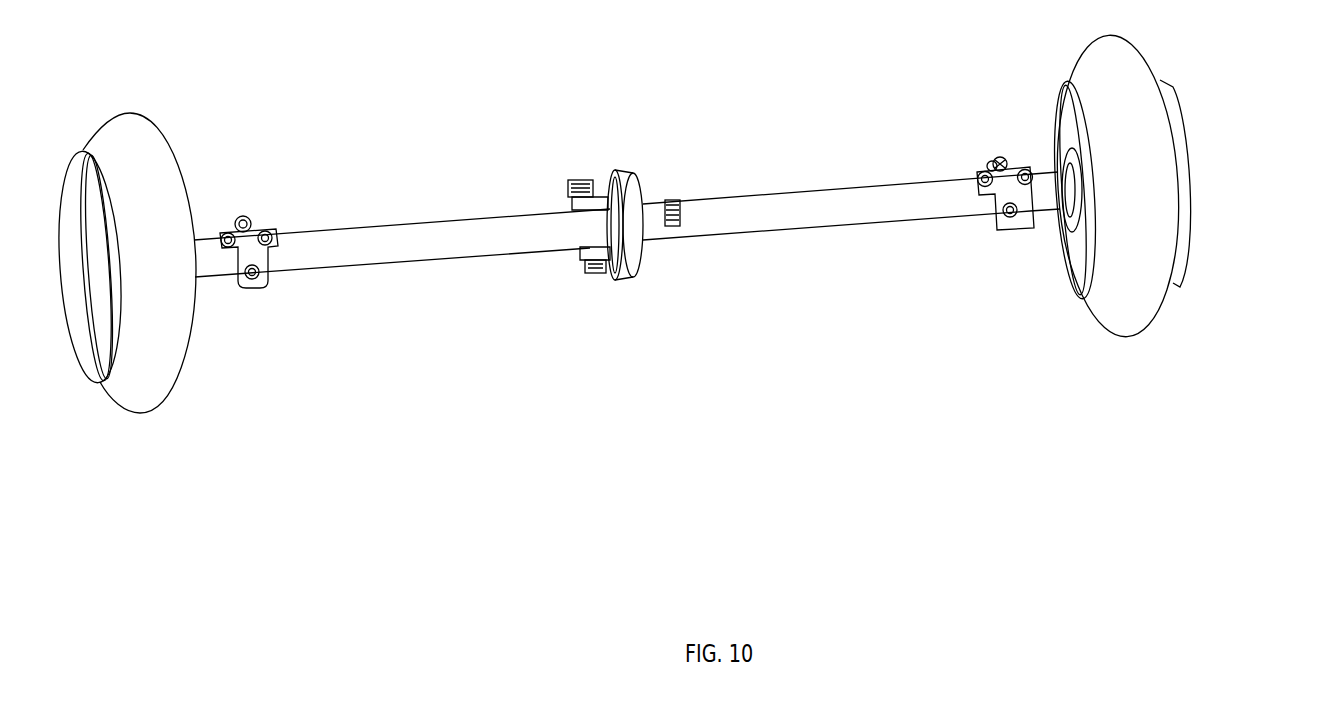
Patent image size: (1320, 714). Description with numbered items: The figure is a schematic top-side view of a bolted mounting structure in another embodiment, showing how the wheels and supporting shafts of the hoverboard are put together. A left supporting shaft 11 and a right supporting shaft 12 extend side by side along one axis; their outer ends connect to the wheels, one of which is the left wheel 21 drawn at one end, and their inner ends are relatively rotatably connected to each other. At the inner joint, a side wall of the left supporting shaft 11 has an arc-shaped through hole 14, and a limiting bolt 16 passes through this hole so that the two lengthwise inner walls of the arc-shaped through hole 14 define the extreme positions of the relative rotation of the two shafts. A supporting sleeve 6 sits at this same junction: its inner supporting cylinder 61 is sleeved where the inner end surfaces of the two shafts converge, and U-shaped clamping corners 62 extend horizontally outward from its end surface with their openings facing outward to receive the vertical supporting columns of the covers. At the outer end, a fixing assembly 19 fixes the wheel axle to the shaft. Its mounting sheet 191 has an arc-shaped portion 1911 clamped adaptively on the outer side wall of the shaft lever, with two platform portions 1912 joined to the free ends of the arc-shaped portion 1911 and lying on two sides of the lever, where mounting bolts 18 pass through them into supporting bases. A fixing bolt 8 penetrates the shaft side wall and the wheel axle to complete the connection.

The supporting sleeve 6 is at (517, 279).
The inner supporting cylinder 61 is at (598, 233).
The U-shaped clamping corner 62 is at (594, 270).
The fixing bolt 8 is at (958, 173).
The left supporting shaft 11 is at (757, 245).
The right supporting shaft 12 is at (395, 260).
The arc-shaped through hole 14 is at (667, 250).
The limiting bolt 16 is at (664, 186).
The mounting bolt 18 is at (982, 237).
The fixing assembly 19 is at (870, 109).
The mounting sheet 191 is at (891, 103).
The arc-shaped portion 1911 is at (990, 157).
The platform portion 1912 is at (970, 145).
The left wheel 21 is at (1158, 159).